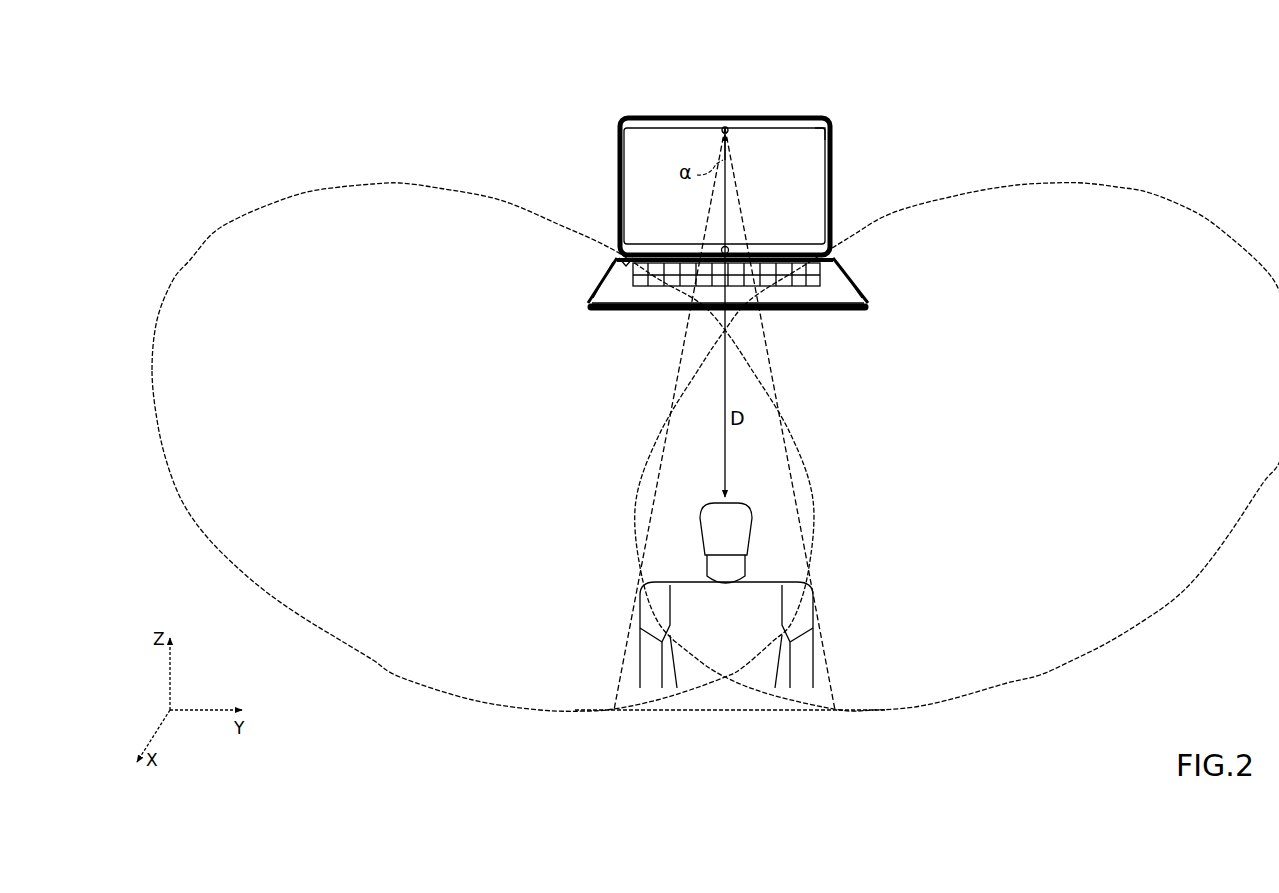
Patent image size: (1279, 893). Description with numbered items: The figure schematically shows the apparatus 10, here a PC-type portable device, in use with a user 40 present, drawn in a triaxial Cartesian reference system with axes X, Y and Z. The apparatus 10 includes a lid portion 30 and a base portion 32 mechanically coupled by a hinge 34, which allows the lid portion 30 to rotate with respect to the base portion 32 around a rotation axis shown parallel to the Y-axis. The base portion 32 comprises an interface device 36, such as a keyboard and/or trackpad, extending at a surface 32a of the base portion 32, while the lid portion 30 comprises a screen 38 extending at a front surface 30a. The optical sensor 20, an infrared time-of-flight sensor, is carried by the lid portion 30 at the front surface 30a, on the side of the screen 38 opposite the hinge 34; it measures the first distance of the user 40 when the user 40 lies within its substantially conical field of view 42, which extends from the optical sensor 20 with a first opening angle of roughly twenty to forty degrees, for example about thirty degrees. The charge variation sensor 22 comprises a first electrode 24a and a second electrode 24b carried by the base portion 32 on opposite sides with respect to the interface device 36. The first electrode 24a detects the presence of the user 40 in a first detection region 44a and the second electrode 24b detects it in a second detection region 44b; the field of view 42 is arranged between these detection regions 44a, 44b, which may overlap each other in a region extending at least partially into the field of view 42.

The apparatus 10 is at (575, 129).
The optical sensor 20 is at (727, 118).
The charge variation sensor 22 is at (723, 277).
The first electrode 24a is at (598, 285).
The second electrode 24b is at (855, 265).
The lid portion 30 is at (835, 157).
The front surface 30a is at (826, 134).
The base portion 32 is at (787, 302).
The surface 32a is at (625, 255).
The hinge 34 is at (777, 257).
The interface device 36 is at (648, 302).
The screen 38 is at (653, 145).
The user 40 is at (730, 633).
The field of view 42 is at (715, 713).
The first detection region 44a is at (428, 643).
The second detection region 44b is at (1019, 620).